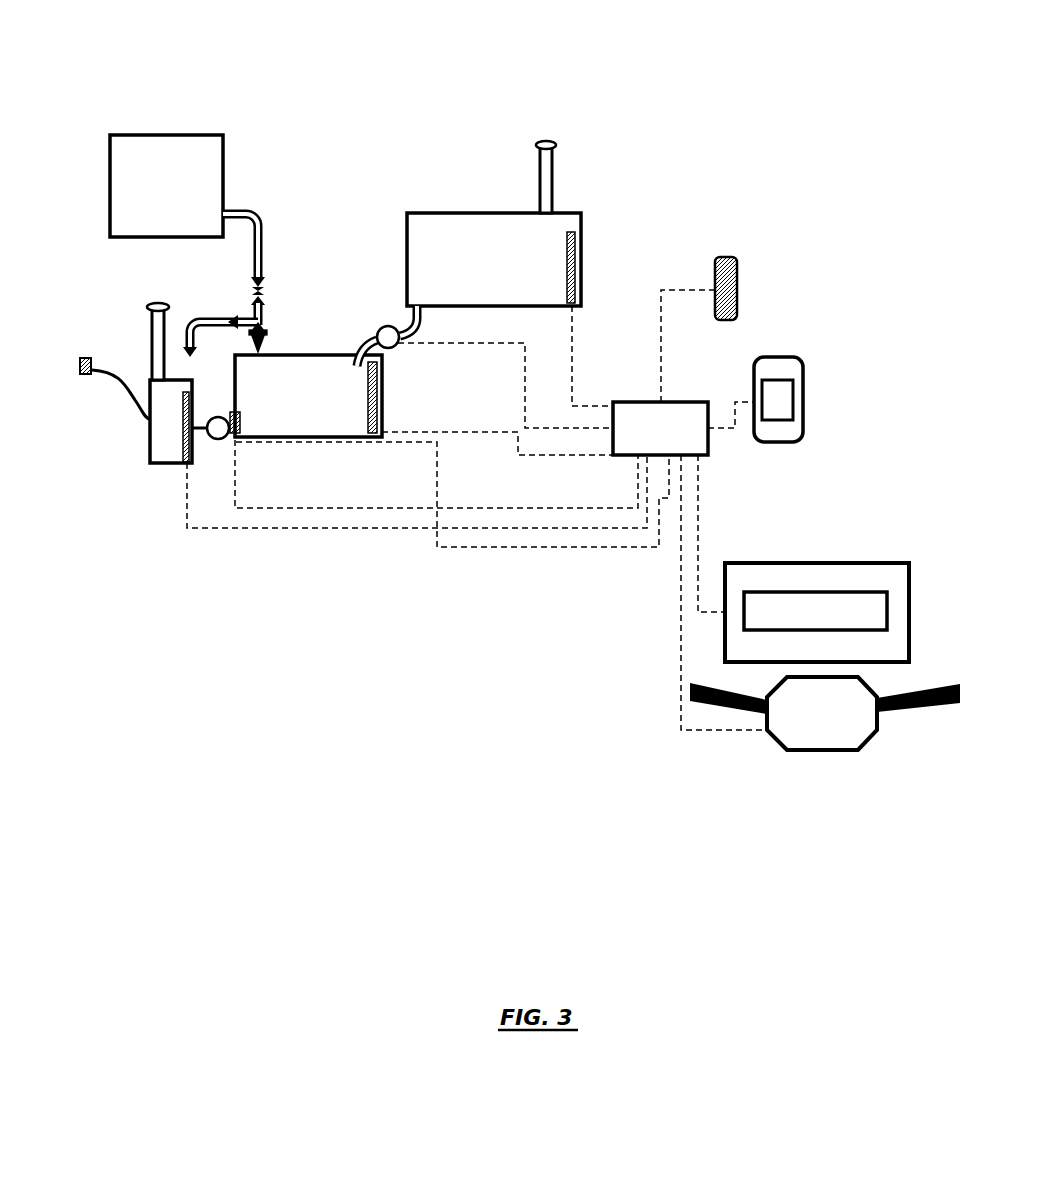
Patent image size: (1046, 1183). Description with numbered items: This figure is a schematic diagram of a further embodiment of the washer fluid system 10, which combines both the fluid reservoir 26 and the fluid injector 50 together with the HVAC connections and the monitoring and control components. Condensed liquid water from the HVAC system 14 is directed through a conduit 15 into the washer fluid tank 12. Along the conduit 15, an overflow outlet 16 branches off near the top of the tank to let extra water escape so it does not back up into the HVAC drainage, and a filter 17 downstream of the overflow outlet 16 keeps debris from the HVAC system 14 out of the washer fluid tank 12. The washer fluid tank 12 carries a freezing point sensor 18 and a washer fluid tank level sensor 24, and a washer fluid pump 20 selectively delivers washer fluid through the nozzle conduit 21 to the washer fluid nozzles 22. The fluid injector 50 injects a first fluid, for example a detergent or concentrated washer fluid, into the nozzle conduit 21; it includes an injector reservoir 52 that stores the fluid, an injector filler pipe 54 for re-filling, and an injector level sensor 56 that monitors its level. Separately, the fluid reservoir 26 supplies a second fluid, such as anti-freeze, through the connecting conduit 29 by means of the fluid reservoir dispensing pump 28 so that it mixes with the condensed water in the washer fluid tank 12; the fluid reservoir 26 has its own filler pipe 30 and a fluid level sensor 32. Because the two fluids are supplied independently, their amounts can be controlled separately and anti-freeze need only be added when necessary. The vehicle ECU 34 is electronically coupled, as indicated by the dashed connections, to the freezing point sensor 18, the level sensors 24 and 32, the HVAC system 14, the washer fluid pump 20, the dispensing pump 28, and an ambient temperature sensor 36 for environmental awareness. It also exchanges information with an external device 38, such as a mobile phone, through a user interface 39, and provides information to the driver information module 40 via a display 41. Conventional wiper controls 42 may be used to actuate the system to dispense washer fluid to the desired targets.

The washer fluid system 10 is at (466, 60).
The washer fluid tank 12 is at (300, 425).
The HVAC system 14 is at (212, 178).
The conduit 15 is at (266, 246).
The overflow outlet 16 is at (247, 320).
The filter 17 is at (266, 331).
The freezing point sensor 18 is at (238, 436).
The washer fluid pump 20 is at (217, 440).
The nozzle conduit 21 is at (118, 387).
The washer fluid nozzles 22 is at (88, 356).
The washer fluid tank level sensor 24 is at (383, 404).
The fluid reservoir 26 is at (419, 243).
The fluid reservoir dispensing pump 28 is at (396, 350).
The connecting conduit 29 is at (423, 318).
The filler pipe 30 is at (545, 175).
The fluid level sensor 32 is at (578, 261).
The vehicle ECU 34 is at (650, 410).
The ambient temperature sensor 36 is at (738, 272).
The external device 38 is at (793, 367).
The user interface 39 is at (787, 403).
The driver information module 40 is at (790, 572).
The display 41 is at (845, 598).
The wiper controls 42 is at (825, 737).
The fluid injector 50 is at (125, 414).
The injector reservoir 52 is at (163, 435).
The injector filler pipe 54 is at (157, 362).
The injector level sensor 56 is at (183, 448).